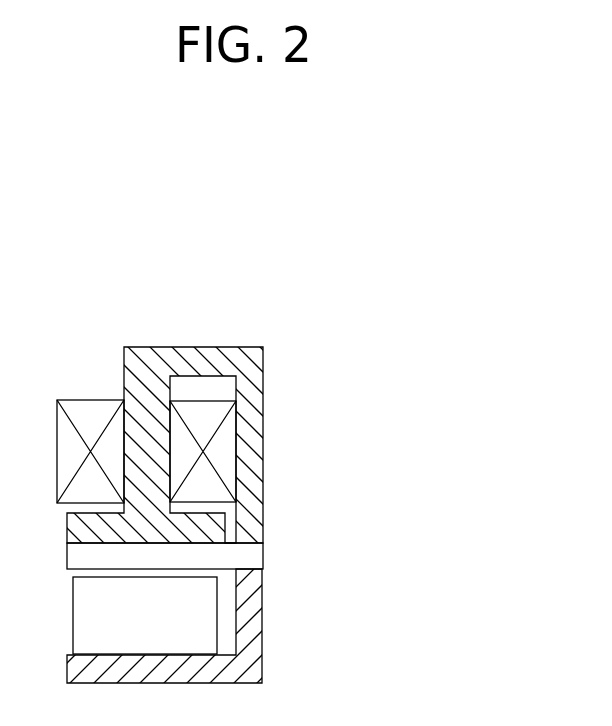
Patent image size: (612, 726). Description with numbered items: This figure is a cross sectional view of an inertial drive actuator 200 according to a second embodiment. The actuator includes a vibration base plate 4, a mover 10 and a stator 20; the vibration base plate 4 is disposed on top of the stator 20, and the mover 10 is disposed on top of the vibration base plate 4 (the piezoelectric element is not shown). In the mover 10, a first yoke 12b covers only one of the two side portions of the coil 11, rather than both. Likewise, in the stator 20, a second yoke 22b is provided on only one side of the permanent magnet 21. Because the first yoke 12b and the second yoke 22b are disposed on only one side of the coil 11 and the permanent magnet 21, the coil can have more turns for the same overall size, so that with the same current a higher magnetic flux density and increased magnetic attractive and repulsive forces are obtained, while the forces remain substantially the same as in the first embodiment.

The inertial drive actuator 200 is at (357, 248).
The mover 10 is at (382, 317).
The coil 11 is at (223, 442).
The first yoke 12b is at (255, 357).
The vibration base plate 4 is at (245, 553).
The stator 20 is at (378, 590).
The permanent magnet 21 is at (202, 603).
The second yoke 22b is at (255, 677).